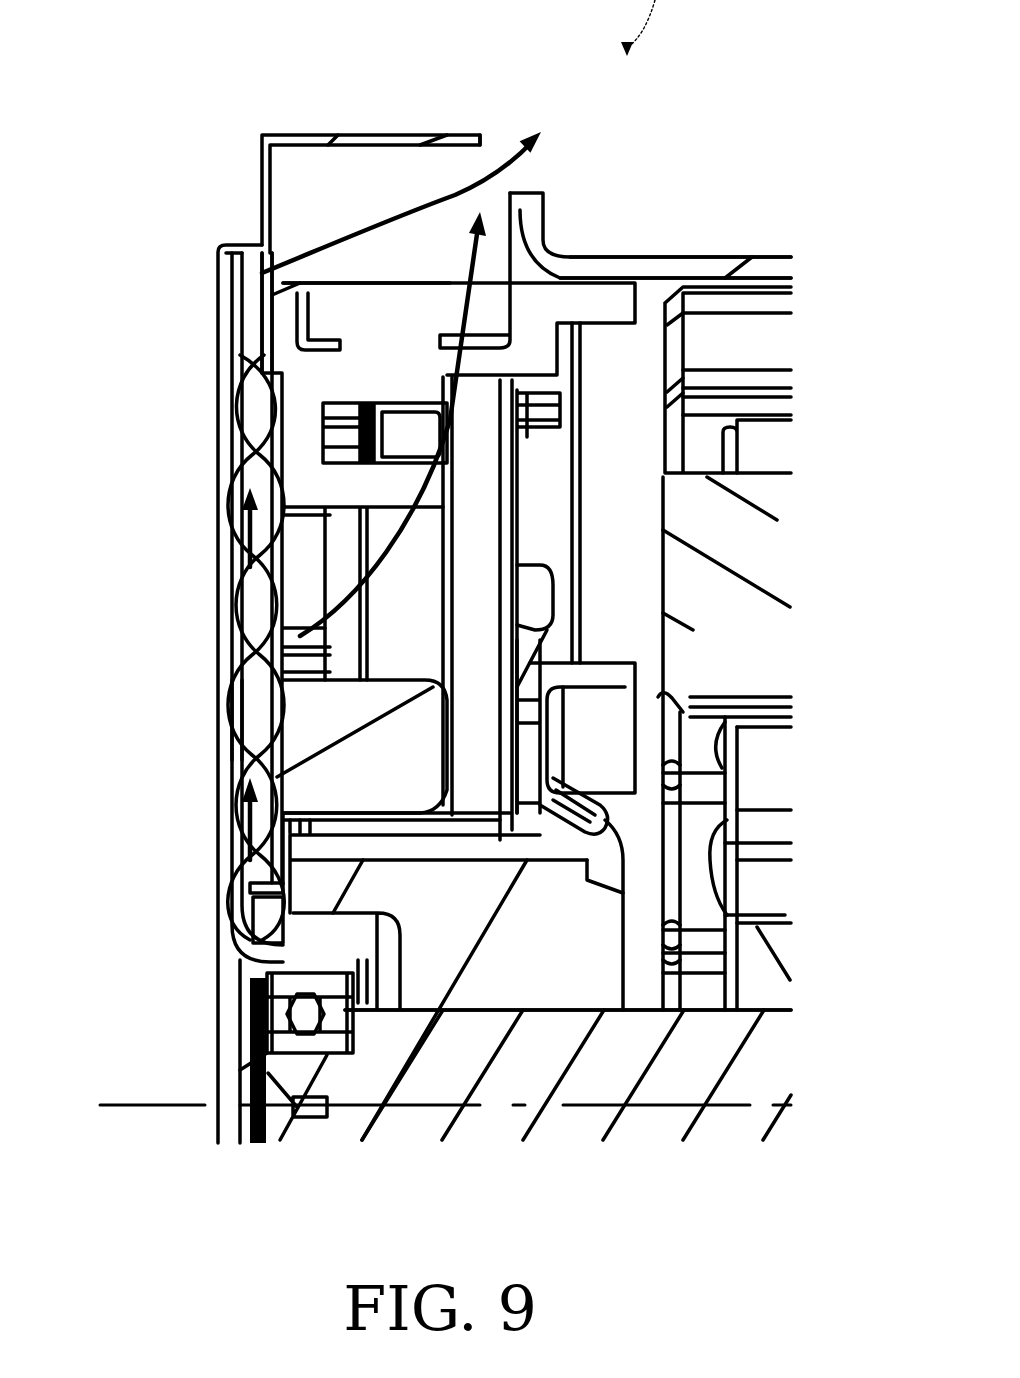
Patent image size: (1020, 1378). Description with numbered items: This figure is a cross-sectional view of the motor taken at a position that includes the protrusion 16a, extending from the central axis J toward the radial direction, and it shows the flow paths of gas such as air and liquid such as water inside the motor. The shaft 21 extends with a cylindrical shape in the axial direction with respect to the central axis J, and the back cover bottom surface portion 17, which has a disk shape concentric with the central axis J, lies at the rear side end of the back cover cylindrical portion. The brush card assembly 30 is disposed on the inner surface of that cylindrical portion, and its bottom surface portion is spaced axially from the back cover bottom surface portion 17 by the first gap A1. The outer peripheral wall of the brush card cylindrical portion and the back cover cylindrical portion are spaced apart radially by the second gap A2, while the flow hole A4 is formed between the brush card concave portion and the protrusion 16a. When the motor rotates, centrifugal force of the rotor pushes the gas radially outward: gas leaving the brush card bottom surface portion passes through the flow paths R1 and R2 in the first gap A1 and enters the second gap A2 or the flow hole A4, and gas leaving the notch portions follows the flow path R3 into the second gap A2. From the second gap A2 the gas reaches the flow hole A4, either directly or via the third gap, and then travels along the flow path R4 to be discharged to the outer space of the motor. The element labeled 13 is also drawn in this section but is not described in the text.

The brush card assembly 30 is at (343, 270).
The flow hole A4 is at (410, 182).
The protrusion 16a is at (360, 140).
The flow path R4 is at (455, 192).
The housing wall 13 is at (703, 262).
The second gap A2 is at (305, 270).
The flow path R3 is at (420, 483).
The flow path R2 is at (248, 528).
The back cover bottom surface portion 17 is at (232, 576).
The first gap A1 is at (250, 716).
The flow path R1 is at (250, 826).
The central axis J is at (118, 1095).
The shaft 21 is at (603, 1080).